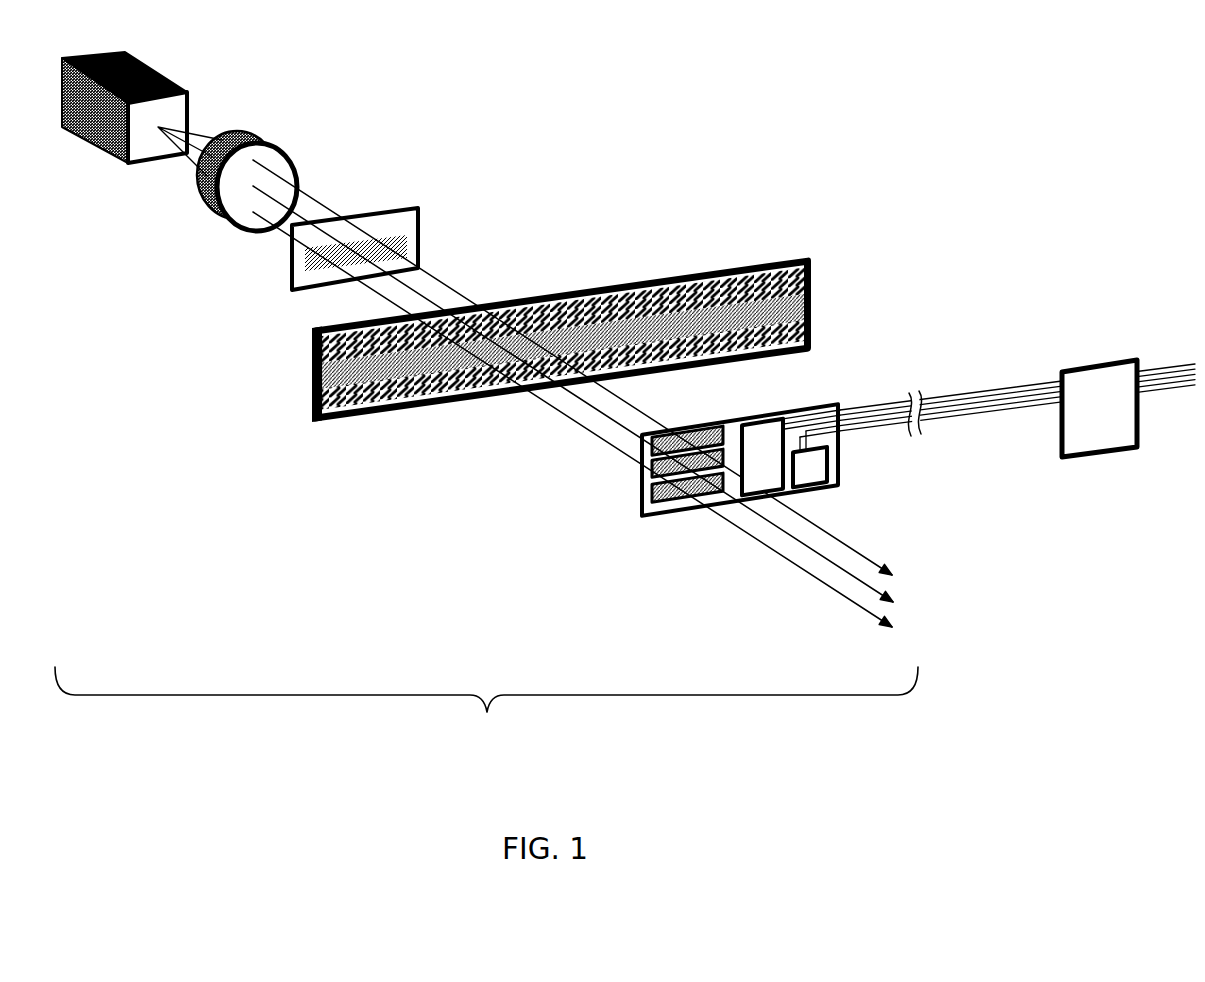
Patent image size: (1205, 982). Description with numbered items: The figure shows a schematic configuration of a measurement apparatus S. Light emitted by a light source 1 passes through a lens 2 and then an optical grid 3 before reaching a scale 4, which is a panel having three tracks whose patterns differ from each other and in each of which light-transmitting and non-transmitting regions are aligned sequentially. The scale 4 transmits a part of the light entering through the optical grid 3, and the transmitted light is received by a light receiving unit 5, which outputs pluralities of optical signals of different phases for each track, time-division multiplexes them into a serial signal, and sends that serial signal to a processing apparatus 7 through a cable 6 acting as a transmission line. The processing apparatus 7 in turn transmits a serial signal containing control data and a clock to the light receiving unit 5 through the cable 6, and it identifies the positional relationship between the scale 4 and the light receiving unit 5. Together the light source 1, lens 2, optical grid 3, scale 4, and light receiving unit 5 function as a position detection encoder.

The measurement apparatus S is at (620, 130).
The light source 1 is at (137, 52).
The lens 2 is at (253, 130).
The optical grid 3 is at (413, 206).
The scale 4 is at (534, 318).
The light receiving unit 5 is at (573, 393).
The cable 6 is at (965, 396).
The processing apparatus 7 is at (1135, 360).